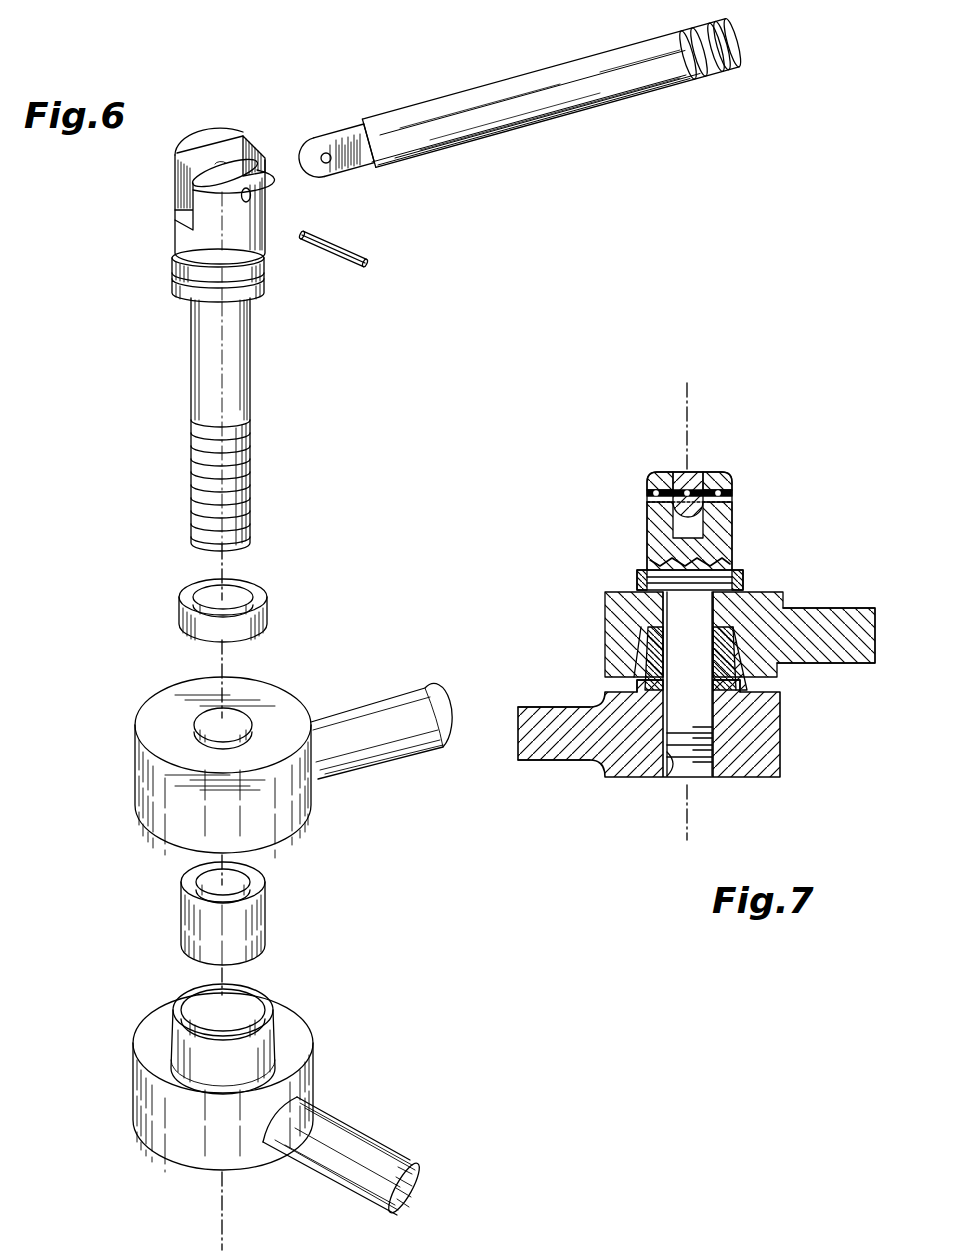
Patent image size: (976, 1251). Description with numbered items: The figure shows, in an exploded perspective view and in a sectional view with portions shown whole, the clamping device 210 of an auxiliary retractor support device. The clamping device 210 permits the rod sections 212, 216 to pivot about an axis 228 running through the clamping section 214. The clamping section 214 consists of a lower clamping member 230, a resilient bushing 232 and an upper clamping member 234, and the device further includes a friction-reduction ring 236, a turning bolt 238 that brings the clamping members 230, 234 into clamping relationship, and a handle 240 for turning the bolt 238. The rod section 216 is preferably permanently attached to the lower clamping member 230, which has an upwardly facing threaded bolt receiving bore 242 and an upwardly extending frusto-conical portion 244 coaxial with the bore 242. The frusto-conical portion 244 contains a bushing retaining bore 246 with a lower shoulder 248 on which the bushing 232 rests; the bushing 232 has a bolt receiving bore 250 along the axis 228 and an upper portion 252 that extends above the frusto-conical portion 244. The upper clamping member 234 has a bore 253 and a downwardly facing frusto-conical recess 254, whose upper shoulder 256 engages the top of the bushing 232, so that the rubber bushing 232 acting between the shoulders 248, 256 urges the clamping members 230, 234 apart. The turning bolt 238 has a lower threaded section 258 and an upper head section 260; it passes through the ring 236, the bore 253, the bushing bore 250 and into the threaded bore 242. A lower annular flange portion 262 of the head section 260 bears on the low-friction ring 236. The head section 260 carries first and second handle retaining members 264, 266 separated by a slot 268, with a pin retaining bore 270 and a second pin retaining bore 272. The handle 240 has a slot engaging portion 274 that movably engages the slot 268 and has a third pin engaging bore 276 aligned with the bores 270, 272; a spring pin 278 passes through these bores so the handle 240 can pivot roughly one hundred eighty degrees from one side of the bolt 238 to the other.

In FIG. 6, the clamping device 210 is at (304, 566).
In FIG. 7, the clamping device 210 is at (758, 584).
In FIG. 6, the rod section 212 is at (372, 703).
In FIG. 7, the rod section 212 is at (835, 660).
In FIG. 6, the clamping section 214 is at (122, 1152).
In FIG. 6, the rod section 216 is at (347, 1133).
In FIG. 7, the rod section 216 is at (558, 745).
In FIG. 6, the axis 228 is at (224, 662).
In FIG. 6, the lower clamping member 230 is at (300, 1047).
In FIG. 7, the lower clamping member 230 is at (780, 750).
In FIG. 6, the resilient bushing 232 is at (252, 932).
In FIG. 7, the resilient bushing 232 is at (735, 690).
In FIG. 6, the upper clamping member 234 is at (300, 812).
In FIG. 7, the upper clamping member 234 is at (760, 603).
In FIG. 6, the friction-reduction ring 236 is at (190, 594).
In FIG. 6, the turning bolt 238 is at (250, 362).
In FIG. 7, the turning bolt 238 is at (649, 555).
In FIG. 6, the handle 240 is at (560, 120).
In FIG. 7, the handle 240 is at (700, 462).
In FIG. 7, the threaded bolt receiving bore 242 is at (668, 778).
In FIG. 6, the frusto-conical portion 244 is at (276, 1040).
In FIG. 7, the frusto-conical portion 244 is at (640, 690).
In FIG. 6, the bushing retaining bore 246 is at (252, 1000).
In FIG. 7, the bushing retaining bore 246 is at (652, 652).
In FIG. 7, the lower shoulder 248 is at (660, 690).
In FIG. 6, the bolt receiving bore 250 is at (237, 880).
In FIG. 7, the bolt receiving bore 250 is at (665, 650).
In FIG. 7, the upper portion 252 is at (722, 652).
In FIG. 6, the bore 253 is at (207, 722).
In FIG. 7, the bore 253 is at (716, 622).
In FIG. 7, the frusto-conical recess 254 is at (643, 635).
In FIG. 7, the upper shoulder 256 is at (665, 630).
In FIG. 6, the lower threaded section 258 is at (203, 455).
In FIG. 6, the upper head section 260 is at (183, 237).
In FIG. 6, the lower annular flange portion 262 is at (256, 288).
In FIG. 6, the first handle retaining member 264 is at (259, 172).
In FIG. 7, the first handle retaining member 264 is at (702, 472).
In FIG. 6, the second handle retaining member 266 is at (224, 131).
In FIG. 7, the second handle retaining member 266 is at (649, 480).
In FIG. 6, the slot 268 is at (250, 138).
In FIG. 6, the pin retaining bore 270 is at (251, 197).
In FIG. 7, the pin retaining bore 270 is at (730, 482).
In FIG. 7, the second pin retaining bore 272 is at (656, 478).
In FIG. 6, the slot engaging portion 274 is at (350, 140).
In FIG. 7, the slot engaging portion 274 is at (697, 470).
In FIG. 6, the third pin engaging bore 276 is at (330, 162).
In FIG. 7, the third pin engaging bore 276 is at (685, 478).
In FIG. 6, the spring pin 278 is at (362, 252).